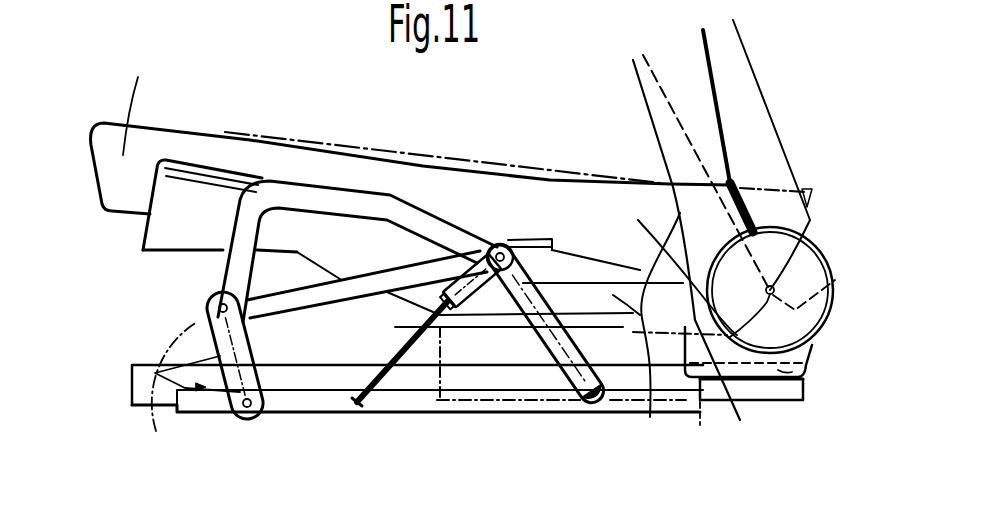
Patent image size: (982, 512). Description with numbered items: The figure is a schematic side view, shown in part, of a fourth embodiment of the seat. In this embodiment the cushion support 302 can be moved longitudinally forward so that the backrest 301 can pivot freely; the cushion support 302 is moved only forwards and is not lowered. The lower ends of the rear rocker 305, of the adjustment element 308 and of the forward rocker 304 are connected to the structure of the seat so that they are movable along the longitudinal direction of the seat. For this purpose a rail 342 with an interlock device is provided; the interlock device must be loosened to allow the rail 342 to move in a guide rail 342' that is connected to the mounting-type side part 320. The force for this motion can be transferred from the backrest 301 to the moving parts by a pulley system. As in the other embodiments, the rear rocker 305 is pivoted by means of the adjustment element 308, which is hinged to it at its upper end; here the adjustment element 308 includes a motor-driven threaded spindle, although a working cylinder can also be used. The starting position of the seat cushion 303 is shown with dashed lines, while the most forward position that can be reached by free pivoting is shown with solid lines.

The backrest 301 is at (757, 83).
The cushion support 302 is at (183, 217).
The seat cushion 303 is at (243, 127).
The forward rocker 304 is at (177, 390).
The rear rocker 305 is at (545, 338).
The adjustment element 308 is at (410, 390).
The mounting-type side part 320 is at (805, 385).
The rail 342 is at (417, 421).
The guide rail 342' is at (498, 373).